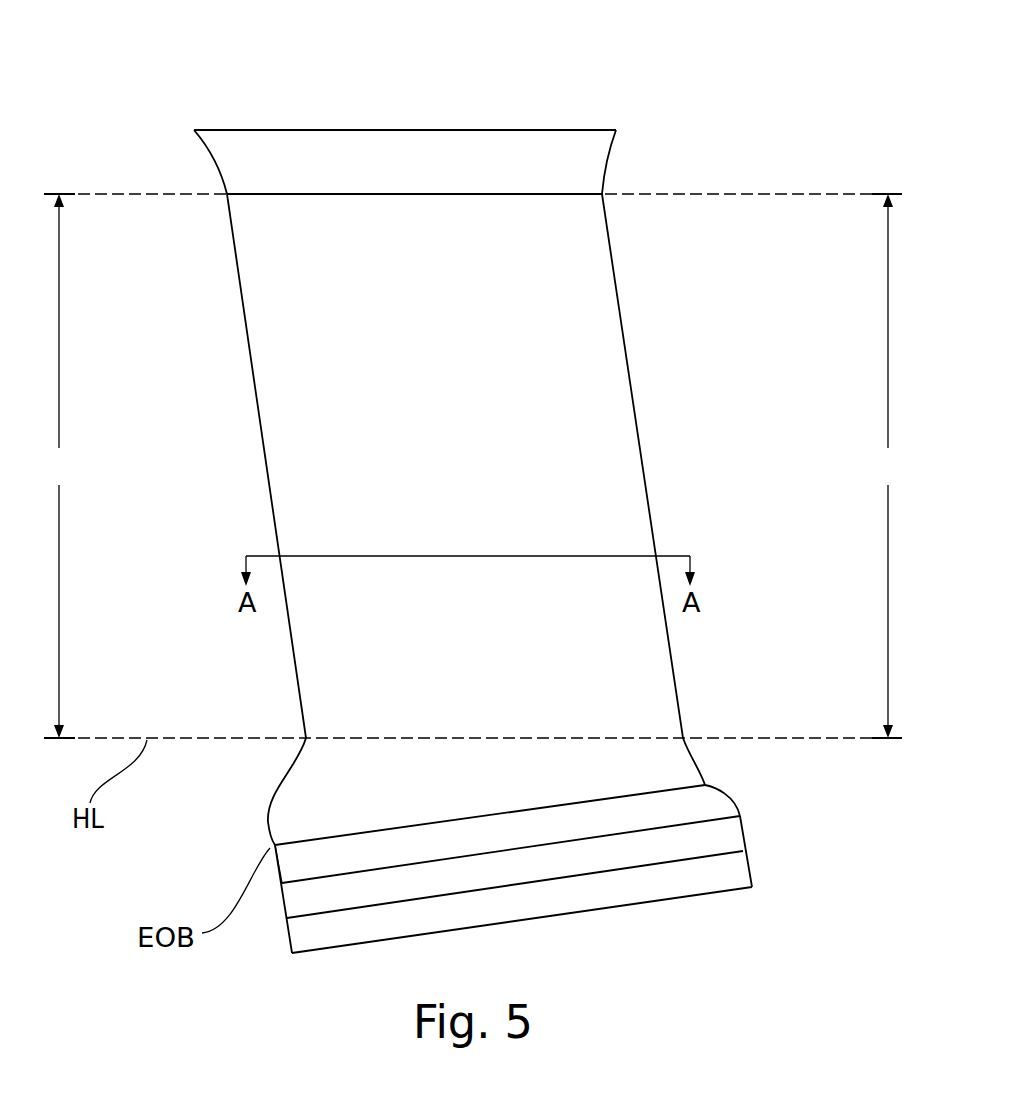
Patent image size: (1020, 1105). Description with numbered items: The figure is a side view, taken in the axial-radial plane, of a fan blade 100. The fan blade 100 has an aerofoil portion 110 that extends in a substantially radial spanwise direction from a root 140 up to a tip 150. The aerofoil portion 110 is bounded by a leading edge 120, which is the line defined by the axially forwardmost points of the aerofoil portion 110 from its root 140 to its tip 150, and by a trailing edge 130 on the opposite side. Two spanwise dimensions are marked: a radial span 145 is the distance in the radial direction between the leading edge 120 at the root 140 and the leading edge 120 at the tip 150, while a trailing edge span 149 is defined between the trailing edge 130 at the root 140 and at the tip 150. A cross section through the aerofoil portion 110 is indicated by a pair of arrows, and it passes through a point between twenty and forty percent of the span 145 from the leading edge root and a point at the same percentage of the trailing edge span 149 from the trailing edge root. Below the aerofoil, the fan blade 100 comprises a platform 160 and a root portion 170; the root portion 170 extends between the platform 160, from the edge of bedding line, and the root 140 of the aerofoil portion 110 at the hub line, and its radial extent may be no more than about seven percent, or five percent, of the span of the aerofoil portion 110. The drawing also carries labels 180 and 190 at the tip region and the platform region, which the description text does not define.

The fan blade 100 is at (501, 485).
The aerofoil portion 110 is at (451, 466).
The leading edge 120 is at (255, 400).
The trailing edge 130 is at (639, 454).
The root 140 is at (327, 739).
The radial span 145 is at (59, 466).
The trailing edge span 149 is at (888, 466).
The tip 150 is at (251, 193).
The platform 160 is at (673, 788).
The root portion 170 is at (273, 821).
The tip shroud 180 is at (393, 122).
The platform 190 is at (502, 852).